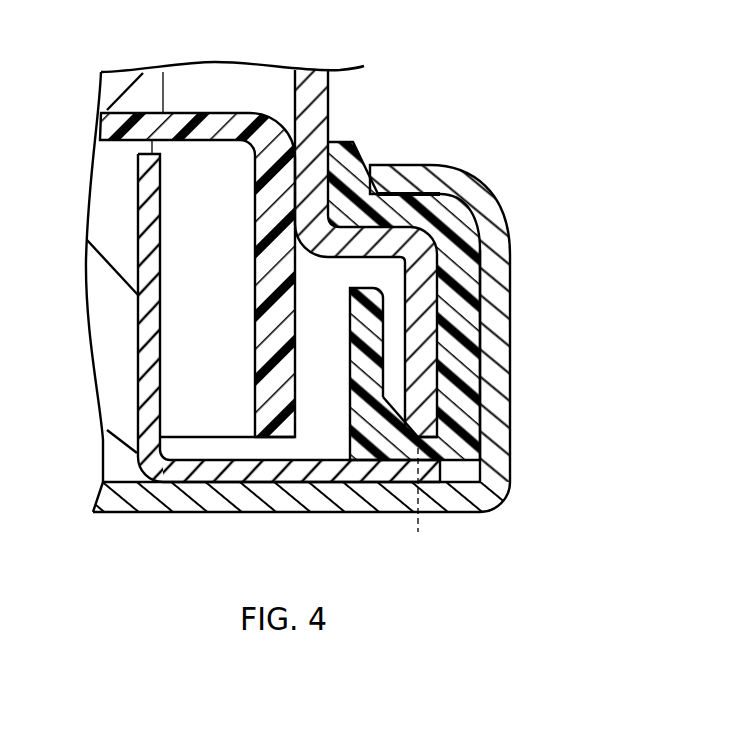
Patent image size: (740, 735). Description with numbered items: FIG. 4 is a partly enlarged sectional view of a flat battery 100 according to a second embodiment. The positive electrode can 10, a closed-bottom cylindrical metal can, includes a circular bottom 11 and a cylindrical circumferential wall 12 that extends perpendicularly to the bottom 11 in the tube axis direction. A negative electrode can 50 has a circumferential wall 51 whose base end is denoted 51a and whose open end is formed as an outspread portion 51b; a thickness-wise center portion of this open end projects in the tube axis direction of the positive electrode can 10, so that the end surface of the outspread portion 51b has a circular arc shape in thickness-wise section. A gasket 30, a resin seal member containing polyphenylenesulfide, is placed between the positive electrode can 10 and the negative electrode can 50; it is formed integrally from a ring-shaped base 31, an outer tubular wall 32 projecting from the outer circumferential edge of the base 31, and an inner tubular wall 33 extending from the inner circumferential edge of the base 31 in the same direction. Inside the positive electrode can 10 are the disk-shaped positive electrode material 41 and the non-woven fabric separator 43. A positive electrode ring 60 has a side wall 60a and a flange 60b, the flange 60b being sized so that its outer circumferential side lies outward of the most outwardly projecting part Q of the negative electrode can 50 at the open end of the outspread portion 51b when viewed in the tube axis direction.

The flat battery 100 is at (543, 90).
The positive electrode can 10 is at (350, 372).
The bottom 11 is at (162, 497).
The circumferential wall 12 is at (500, 362).
The gasket 30 is at (443, 356).
The base 31 is at (387, 455).
The outer tubular wall 32 is at (362, 348).
The inner tubular wall 33 is at (467, 330).
The positive electrode material 41 is at (113, 230).
The separator 43 is at (212, 123).
The negative electrode can 50 is at (440, 252).
The circumferential wall 51 is at (447, 258).
The base end 51a is at (318, 122).
The outspread portion 51b is at (427, 377).
The positive electrode ring 60 is at (233, 359).
The side wall 60a is at (152, 234).
The flange 60b is at (242, 473).
The most outwardly projecting part Q is at (419, 501).